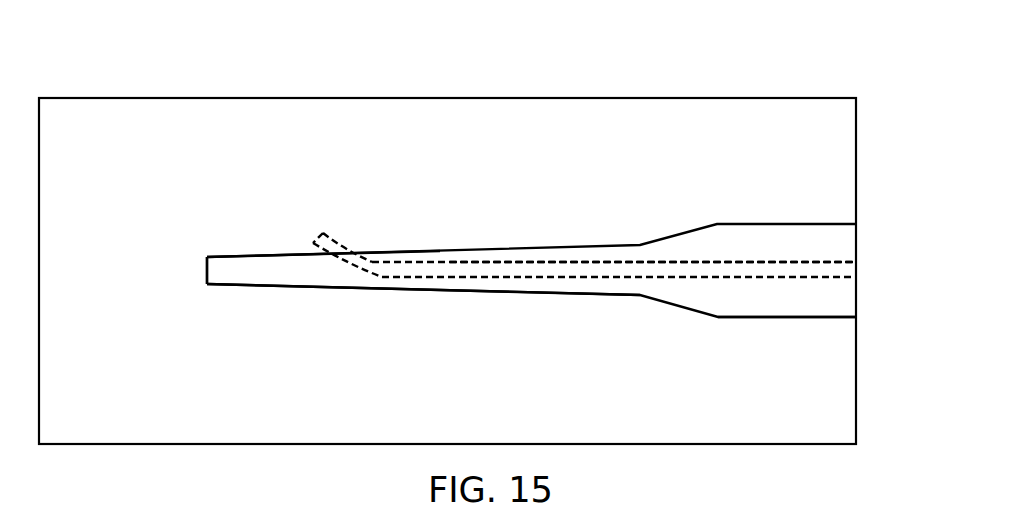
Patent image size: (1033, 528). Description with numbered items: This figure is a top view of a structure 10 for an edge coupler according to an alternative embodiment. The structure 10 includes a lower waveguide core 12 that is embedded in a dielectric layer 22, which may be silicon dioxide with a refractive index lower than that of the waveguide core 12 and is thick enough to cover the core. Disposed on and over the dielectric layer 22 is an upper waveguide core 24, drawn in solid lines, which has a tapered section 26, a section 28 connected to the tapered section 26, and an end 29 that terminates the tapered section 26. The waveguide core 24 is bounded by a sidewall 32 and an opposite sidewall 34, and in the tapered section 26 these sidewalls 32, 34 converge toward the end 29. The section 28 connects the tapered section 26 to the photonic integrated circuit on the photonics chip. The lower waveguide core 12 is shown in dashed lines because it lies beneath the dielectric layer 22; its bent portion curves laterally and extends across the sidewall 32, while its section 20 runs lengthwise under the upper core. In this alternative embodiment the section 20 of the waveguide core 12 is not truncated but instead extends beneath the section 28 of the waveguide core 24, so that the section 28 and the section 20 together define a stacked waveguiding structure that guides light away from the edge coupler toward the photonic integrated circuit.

The structure 10 is at (484, 226).
The waveguide core 12 is at (720, 246).
The section 20 is at (454, 265).
The dielectric layer 22 is at (810, 148).
The waveguide core 24 is at (568, 194).
The tapered section 26 is at (299, 268).
The section 28 is at (778, 290).
The end 29 is at (207, 272).
The sidewall 32 is at (405, 252).
The sidewall 34 is at (467, 292).